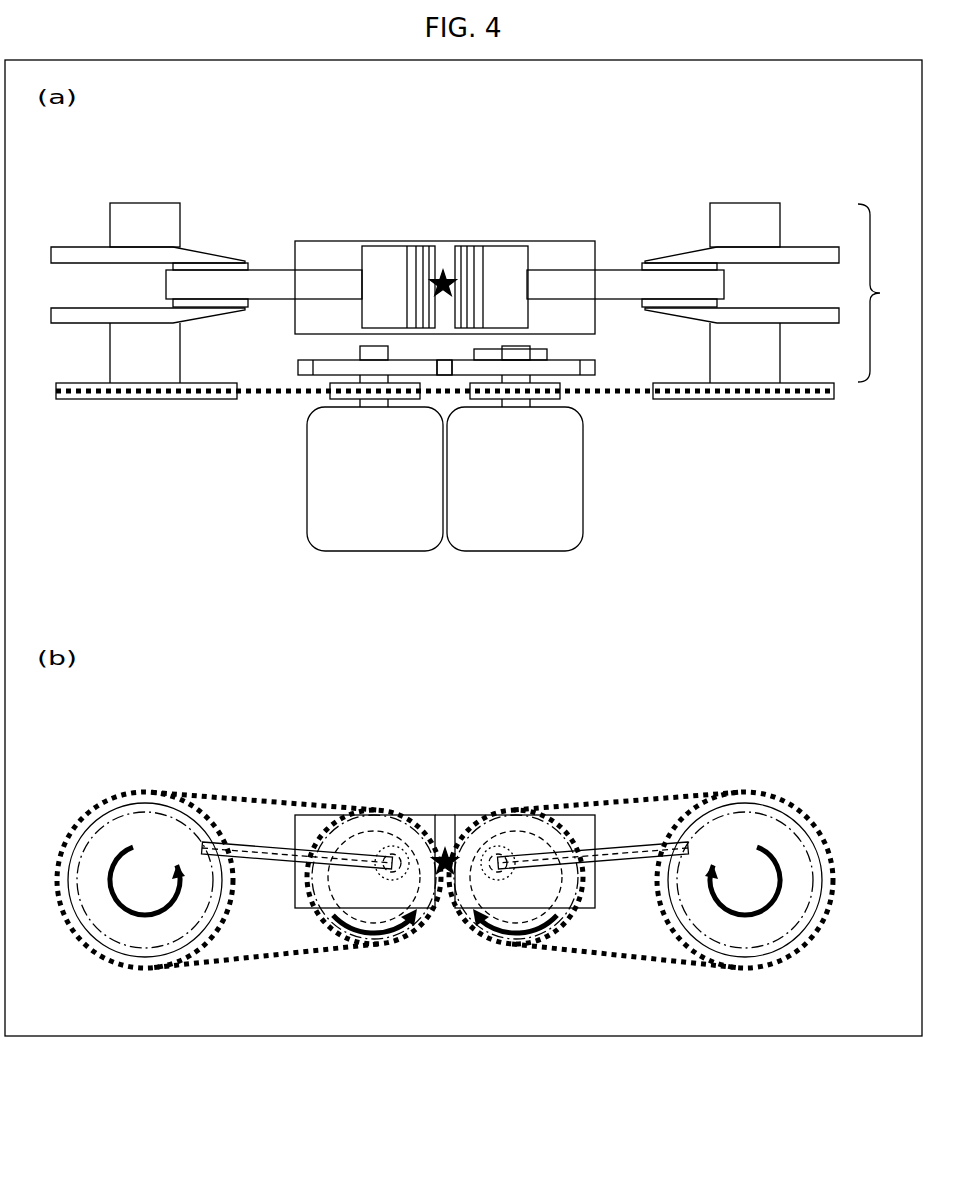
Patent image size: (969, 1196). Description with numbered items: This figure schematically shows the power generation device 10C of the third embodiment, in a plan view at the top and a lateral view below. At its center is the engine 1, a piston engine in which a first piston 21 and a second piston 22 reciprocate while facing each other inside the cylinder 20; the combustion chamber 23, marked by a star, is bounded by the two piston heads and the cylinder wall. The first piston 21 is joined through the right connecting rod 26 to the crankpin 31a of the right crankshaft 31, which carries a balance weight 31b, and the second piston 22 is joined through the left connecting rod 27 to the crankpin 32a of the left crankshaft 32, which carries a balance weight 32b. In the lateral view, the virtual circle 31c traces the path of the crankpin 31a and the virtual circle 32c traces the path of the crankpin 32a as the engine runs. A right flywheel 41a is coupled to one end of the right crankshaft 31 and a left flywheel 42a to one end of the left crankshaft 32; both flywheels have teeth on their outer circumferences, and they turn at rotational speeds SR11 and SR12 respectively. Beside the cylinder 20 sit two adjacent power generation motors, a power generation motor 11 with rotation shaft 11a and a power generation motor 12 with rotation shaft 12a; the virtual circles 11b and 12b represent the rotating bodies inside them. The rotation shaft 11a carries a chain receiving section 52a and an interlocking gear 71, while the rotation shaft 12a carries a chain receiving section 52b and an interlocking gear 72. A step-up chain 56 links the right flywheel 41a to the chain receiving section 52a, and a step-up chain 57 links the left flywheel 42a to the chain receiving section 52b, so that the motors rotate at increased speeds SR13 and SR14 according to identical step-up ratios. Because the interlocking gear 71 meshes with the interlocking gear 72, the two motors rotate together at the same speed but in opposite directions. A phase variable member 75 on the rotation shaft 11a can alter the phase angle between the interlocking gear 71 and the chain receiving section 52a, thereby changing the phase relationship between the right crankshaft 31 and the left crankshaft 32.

The power generation device 10C is at (825, 125).
The engine 1 is at (876, 293).
The power generation motor 11 is at (516, 553).
The power generation motor 12 is at (375, 553).
The rotation shaft 11a is at (528, 347).
The rotation shaft 12a is at (362, 347).
The virtual circle 11b is at (514, 955).
The virtual circle 12b is at (376, 955).
The cylinder 20 is at (562, 240).
The first piston 21 is at (498, 246).
The second piston 22 is at (398, 245).
The combustion chamber 23 is at (443, 266).
The right connecting rod 26 is at (620, 270).
The left connecting rod 27 is at (270, 300).
The right crankshaft 31 is at (766, 198).
The crankpin 31a is at (668, 256).
The balance weight 31b is at (812, 237).
The virtual circle 31c is at (812, 940).
The left crankshaft 32 is at (150, 196).
The crankpin 32a is at (234, 256).
The balance weight 32b is at (80, 236).
The virtual circle 32c is at (79, 940).
The right flywheel 41a is at (798, 386).
The left flywheel 42a is at (92, 386).
The chain receiving section 52a is at (557, 396).
The chain receiving section 52b is at (335, 396).
The step-up chain 56 is at (690, 403).
The step-up chain 57 is at (208, 403).
The interlocking gear 71 is at (597, 368).
The interlocking gear 72 is at (298, 368).
The phase variable member 75 is at (552, 355).
The rotational speed SR11 is at (755, 917).
The rotational speed SR12 is at (148, 916).
The rotational speed SR13 is at (573, 985).
The rotational speed SR14 is at (345, 933).